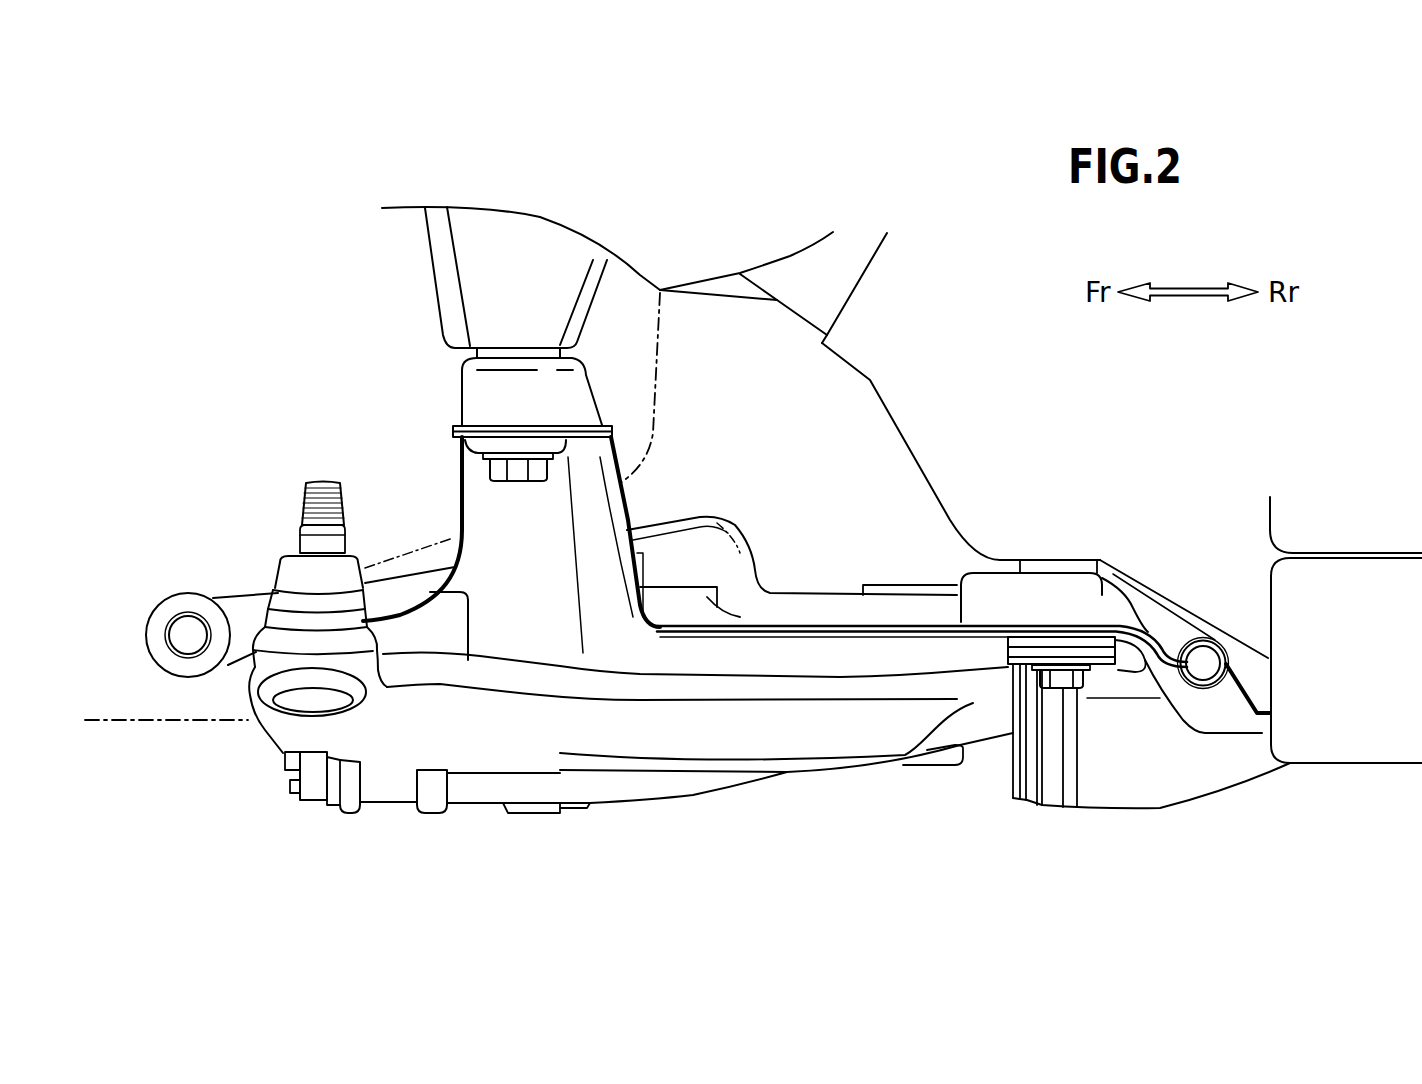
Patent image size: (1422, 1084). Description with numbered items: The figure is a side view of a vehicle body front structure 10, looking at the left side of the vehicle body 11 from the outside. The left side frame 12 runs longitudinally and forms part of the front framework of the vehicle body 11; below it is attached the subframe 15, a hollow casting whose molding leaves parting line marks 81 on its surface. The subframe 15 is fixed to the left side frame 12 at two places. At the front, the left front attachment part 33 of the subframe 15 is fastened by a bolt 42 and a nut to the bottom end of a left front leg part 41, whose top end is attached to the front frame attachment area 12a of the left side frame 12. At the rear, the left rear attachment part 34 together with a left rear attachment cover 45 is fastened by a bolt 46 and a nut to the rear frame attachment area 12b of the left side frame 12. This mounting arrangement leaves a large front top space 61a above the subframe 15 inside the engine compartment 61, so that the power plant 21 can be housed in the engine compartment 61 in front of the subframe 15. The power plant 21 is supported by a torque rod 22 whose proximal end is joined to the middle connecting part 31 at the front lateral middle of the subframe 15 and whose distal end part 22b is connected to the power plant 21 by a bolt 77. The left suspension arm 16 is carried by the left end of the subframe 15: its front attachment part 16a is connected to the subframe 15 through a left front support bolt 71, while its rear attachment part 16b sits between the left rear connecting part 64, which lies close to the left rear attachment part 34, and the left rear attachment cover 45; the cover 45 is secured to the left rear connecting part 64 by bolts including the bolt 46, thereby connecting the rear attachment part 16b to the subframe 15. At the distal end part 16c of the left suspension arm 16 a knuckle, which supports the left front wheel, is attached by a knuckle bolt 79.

The vehicle body front structure 10 is at (322, 245).
The vehicle body 11 is at (613, 185).
The left side frame 12 is at (692, 242).
The front frame attachment area 12a is at (498, 185).
The rear frame attachment area 12b is at (1043, 540).
The subframe 15 is at (456, 484).
The left suspension arm 16 is at (643, 755).
The front attachment part 16a is at (390, 803).
The rear attachment part 16b is at (1010, 733).
The distal end part 16c is at (260, 667).
The power plant 21 is at (660, 392).
The torque rod 22 is at (258, 603).
The distal end part 22b is at (183, 602).
The middle connecting part 31 is at (703, 533).
The left front attachment part 33 is at (573, 393).
The left rear attachment part 34 is at (1067, 600).
The left front leg part 41 is at (483, 258).
The bolt 42 is at (520, 478).
The left rear attachment cover 45 is at (1140, 780).
The bolt 46 is at (1060, 683).
The engine compartment 61 is at (298, 348).
The front top space 61a is at (424, 503).
The left rear connecting part 64 is at (1137, 650).
The left front support bolt 71 is at (287, 757).
The bolt 77 is at (175, 636).
The knuckle bolt 79 is at (307, 500).
The parting line marks 81 is at (823, 620).